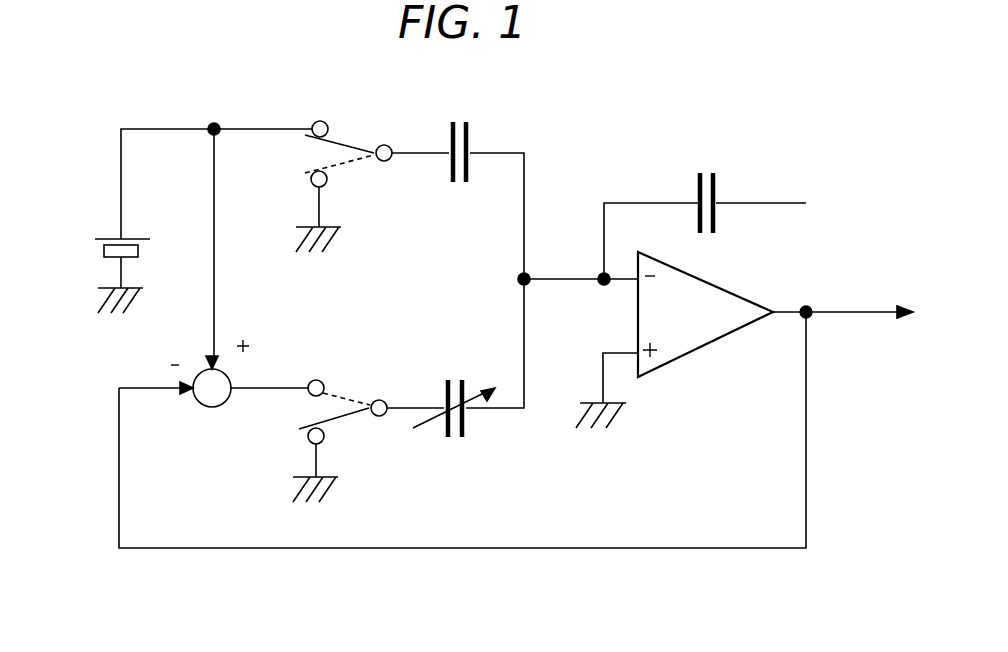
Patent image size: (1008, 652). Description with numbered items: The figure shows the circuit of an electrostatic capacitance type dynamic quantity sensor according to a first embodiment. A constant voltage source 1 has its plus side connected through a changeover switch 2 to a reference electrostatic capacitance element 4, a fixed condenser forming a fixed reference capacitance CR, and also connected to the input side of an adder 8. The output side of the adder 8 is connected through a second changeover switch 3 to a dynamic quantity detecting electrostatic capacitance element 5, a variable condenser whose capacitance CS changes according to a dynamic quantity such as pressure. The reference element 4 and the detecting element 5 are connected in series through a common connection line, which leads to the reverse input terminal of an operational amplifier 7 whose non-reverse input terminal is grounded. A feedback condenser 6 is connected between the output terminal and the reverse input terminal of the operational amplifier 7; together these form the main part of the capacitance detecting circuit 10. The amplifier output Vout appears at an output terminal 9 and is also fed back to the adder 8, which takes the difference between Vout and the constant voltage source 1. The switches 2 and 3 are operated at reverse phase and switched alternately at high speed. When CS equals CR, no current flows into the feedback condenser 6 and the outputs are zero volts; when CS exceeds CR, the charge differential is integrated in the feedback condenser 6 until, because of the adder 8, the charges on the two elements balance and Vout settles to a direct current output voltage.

The constant voltage source 1 is at (110, 233).
The changeover switch 2 is at (348, 143).
The changeover switch 3 is at (350, 422).
The reference electrostatic capacitance element 4 is at (470, 143).
The dynamic quantity detecting electrostatic capacitance element 5 is at (467, 413).
The feedback condenser 6 is at (723, 193).
The operational amplifier 7 is at (688, 353).
The adder 8 is at (212, 407).
The output terminal 9 is at (893, 315).
The capacitance detecting circuit 10 is at (603, 147).